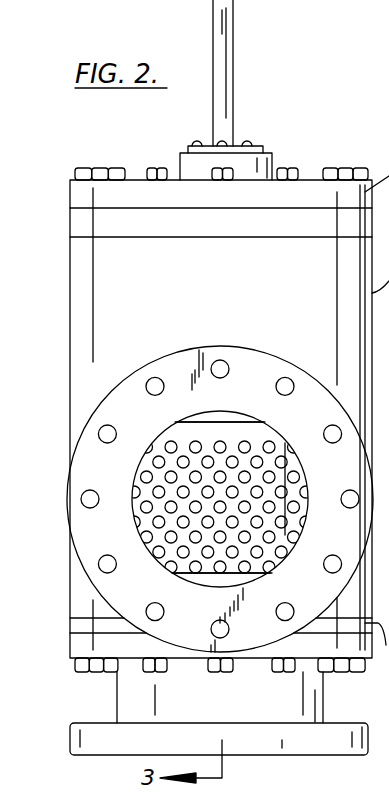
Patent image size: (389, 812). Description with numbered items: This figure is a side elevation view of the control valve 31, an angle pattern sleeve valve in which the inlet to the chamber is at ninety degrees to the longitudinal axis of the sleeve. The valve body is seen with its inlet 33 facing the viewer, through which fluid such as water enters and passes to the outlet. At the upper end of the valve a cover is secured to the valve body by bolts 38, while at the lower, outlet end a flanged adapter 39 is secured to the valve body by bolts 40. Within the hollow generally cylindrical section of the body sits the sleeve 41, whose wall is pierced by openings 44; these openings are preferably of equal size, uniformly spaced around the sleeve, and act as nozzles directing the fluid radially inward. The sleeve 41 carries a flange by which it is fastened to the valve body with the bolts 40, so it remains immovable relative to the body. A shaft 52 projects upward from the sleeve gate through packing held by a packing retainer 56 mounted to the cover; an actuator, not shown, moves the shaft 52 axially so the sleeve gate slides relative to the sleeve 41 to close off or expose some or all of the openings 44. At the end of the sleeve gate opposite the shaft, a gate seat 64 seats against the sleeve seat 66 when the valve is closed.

The control valve 31 is at (335, 99).
The inlet 33 is at (136, 511).
The bolts 38 is at (160, 167).
The flanged adapter 39 is at (117, 694).
The bolts 40 is at (215, 673).
The sleeve 41 is at (245, 432).
The openings 44 is at (166, 480).
The shaft 52 is at (235, 68).
The packing retainer 56 is at (261, 148).
The gate seat 64 is at (228, 428).
The sleeve seat 66 is at (258, 573).